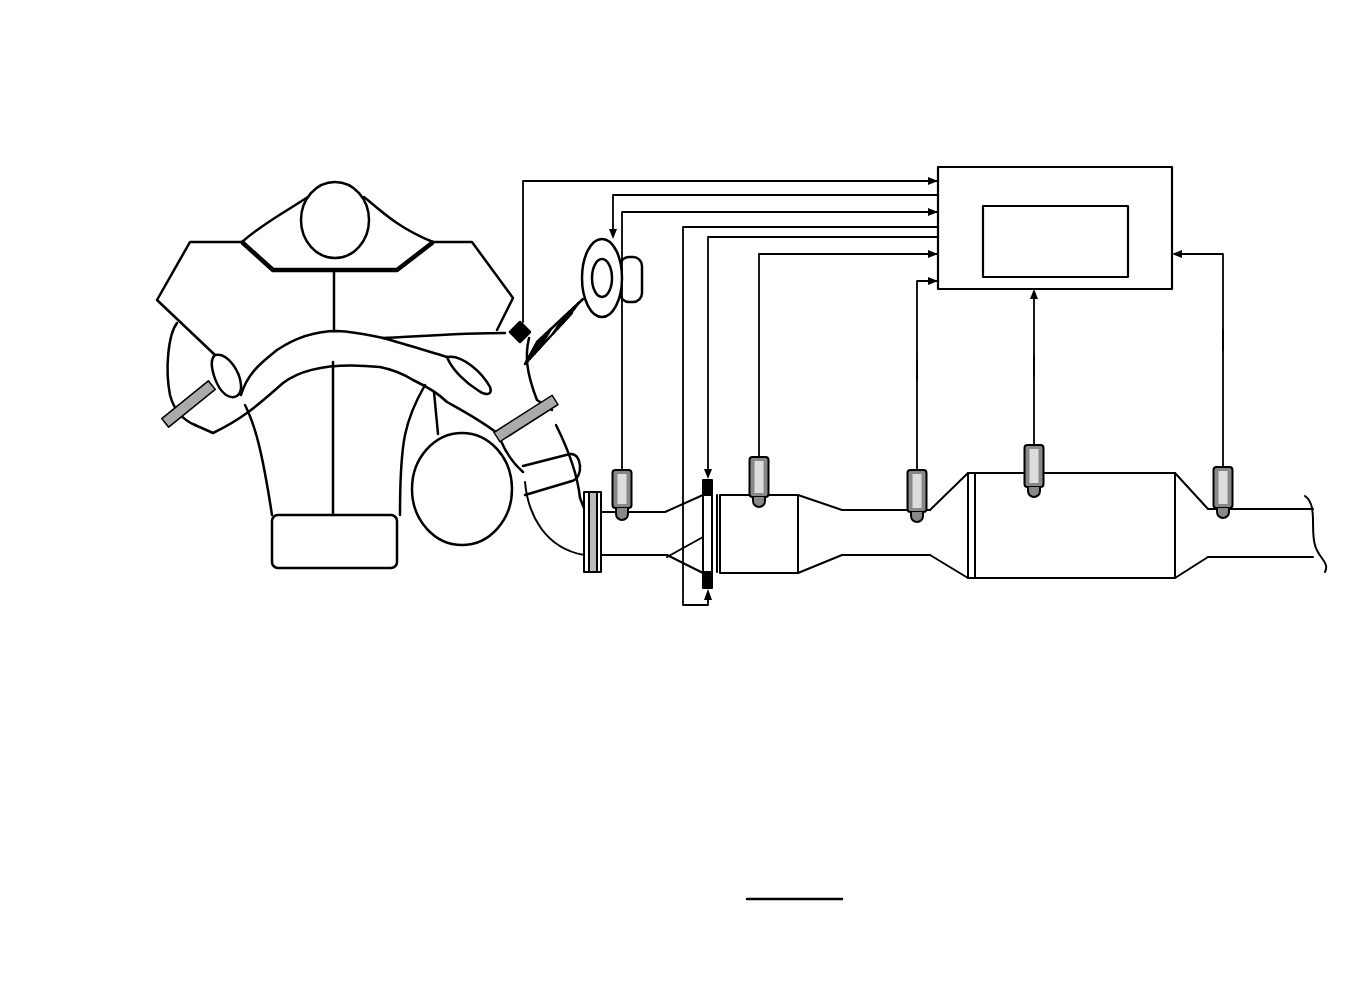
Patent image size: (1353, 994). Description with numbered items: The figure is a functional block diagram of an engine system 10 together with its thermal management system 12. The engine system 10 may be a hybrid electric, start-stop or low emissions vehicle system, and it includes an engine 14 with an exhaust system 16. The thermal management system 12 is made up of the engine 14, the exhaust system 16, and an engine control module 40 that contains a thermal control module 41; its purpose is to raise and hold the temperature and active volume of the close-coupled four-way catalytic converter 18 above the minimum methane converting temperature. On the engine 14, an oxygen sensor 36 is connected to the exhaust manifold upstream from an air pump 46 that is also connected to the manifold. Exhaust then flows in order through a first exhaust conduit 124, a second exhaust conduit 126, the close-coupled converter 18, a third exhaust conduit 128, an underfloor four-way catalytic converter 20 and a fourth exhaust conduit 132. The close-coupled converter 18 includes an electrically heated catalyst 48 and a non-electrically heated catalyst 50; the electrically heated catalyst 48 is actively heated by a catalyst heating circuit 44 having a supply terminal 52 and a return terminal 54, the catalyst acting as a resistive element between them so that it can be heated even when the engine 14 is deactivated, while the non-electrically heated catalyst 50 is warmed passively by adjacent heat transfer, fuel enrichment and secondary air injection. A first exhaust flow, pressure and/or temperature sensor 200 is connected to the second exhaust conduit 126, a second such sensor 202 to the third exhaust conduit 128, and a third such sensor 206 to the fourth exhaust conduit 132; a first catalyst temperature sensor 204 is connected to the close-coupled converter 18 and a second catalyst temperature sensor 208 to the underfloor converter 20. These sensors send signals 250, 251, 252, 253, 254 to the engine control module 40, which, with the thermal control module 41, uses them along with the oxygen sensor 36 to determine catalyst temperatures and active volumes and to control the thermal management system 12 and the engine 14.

The engine system 10 is at (247, 107).
The thermal management system 12 is at (1147, 143).
The engine 14 is at (214, 242).
The exhaust system 16 is at (575, 643).
The close-coupled four-way catalytic converter 18 is at (765, 575).
The underfloor four-way catalytic converter 20 is at (1075, 473).
The oxygen sensor 36 is at (519, 322).
The engine control module 40 is at (1010, 167).
The thermal control module 41 is at (993, 206).
The catalyst heating circuit 44 is at (674, 390).
The air pump 46 is at (591, 244).
The electrically heated catalyst 48 is at (666, 556).
The non-electrically heated catalyst 50 is at (782, 500).
The supply terminal 52 is at (700, 478).
The return terminal 54 is at (711, 588).
The first exhaust conduit 124 is at (538, 528).
The second exhaust conduit 126 is at (613, 556).
The third exhaust conduit 128 is at (877, 557).
The fourth exhaust conduit 132 is at (1243, 557).
The first exhaust flow, pressure and/or temperature sensor 200 is at (616, 468).
The second exhaust flow, pressure and/or temperature sensor 202 is at (910, 470).
The first catalyst temperature sensor 204 is at (766, 458).
The third exhaust flow, pressure and/or temperature sensor 206 is at (1218, 468).
The second catalyst temperature sensor 208 is at (1025, 465).
The temperature signal T1 250 is at (673, 212).
The temperature signal T2 251 is at (918, 370).
The temperature signal T3 252 is at (840, 255).
The temperature signal T4 253 is at (1224, 340).
The temperature signal T5 254 is at (1035, 366).